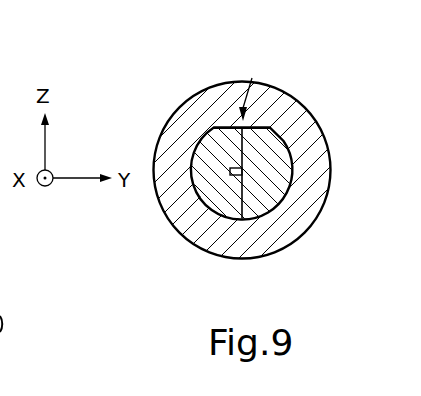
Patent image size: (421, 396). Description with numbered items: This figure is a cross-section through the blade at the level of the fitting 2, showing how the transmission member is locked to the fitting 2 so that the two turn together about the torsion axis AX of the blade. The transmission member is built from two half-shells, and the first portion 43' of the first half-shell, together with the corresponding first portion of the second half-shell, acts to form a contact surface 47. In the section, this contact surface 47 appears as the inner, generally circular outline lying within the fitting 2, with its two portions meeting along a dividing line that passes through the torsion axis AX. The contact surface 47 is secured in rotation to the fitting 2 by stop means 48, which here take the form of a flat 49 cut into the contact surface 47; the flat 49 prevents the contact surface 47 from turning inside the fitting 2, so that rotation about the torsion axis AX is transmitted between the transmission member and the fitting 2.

The fitting 2 is at (307, 215).
The first portion of the first half-shell 43' is at (215, 198).
The contact surface 47 is at (281, 67).
The stop means 48 is at (252, 78).
The flat 49 is at (230, 127).
The torsion axis AX is at (245, 172).